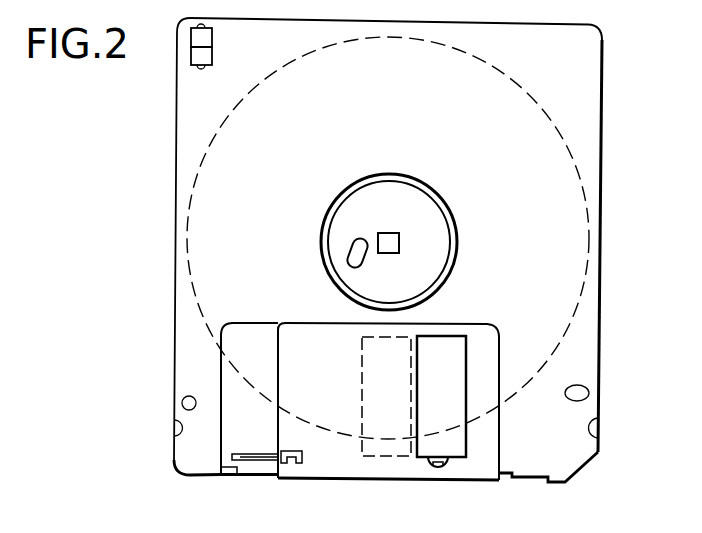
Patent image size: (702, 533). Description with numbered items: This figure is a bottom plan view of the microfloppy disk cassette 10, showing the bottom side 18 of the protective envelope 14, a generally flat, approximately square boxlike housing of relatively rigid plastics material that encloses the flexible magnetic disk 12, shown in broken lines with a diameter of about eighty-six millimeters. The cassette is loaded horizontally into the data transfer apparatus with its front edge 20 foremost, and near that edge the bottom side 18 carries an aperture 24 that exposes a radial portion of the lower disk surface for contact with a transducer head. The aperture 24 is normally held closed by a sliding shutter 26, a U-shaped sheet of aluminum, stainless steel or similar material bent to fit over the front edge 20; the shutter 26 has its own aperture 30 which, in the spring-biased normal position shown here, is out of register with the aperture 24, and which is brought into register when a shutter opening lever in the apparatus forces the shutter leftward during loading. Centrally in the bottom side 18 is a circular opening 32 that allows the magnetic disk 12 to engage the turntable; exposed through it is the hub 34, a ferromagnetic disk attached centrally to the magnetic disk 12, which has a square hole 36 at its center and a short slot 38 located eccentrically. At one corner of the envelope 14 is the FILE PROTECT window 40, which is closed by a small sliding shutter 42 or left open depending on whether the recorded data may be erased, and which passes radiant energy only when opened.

The disk cassette 10 is at (401, 268).
The flexible magnetic disk 12 is at (519, 88).
The protective envelope 14 is at (603, 113).
The bottom side 18 is at (185, 355).
The front edge 20 is at (533, 478).
The aperture 24 is at (362, 428).
The sliding shutter 26 is at (333, 467).
The shutter aperture 30 is at (459, 353).
The circular opening 32 is at (340, 206).
The hub 34 is at (374, 194).
The square hole 36 is at (385, 229).
The short slot 38 is at (355, 251).
The FILE PROTECT window 40 is at (212, 55).
The sliding shutter 42 is at (213, 38).